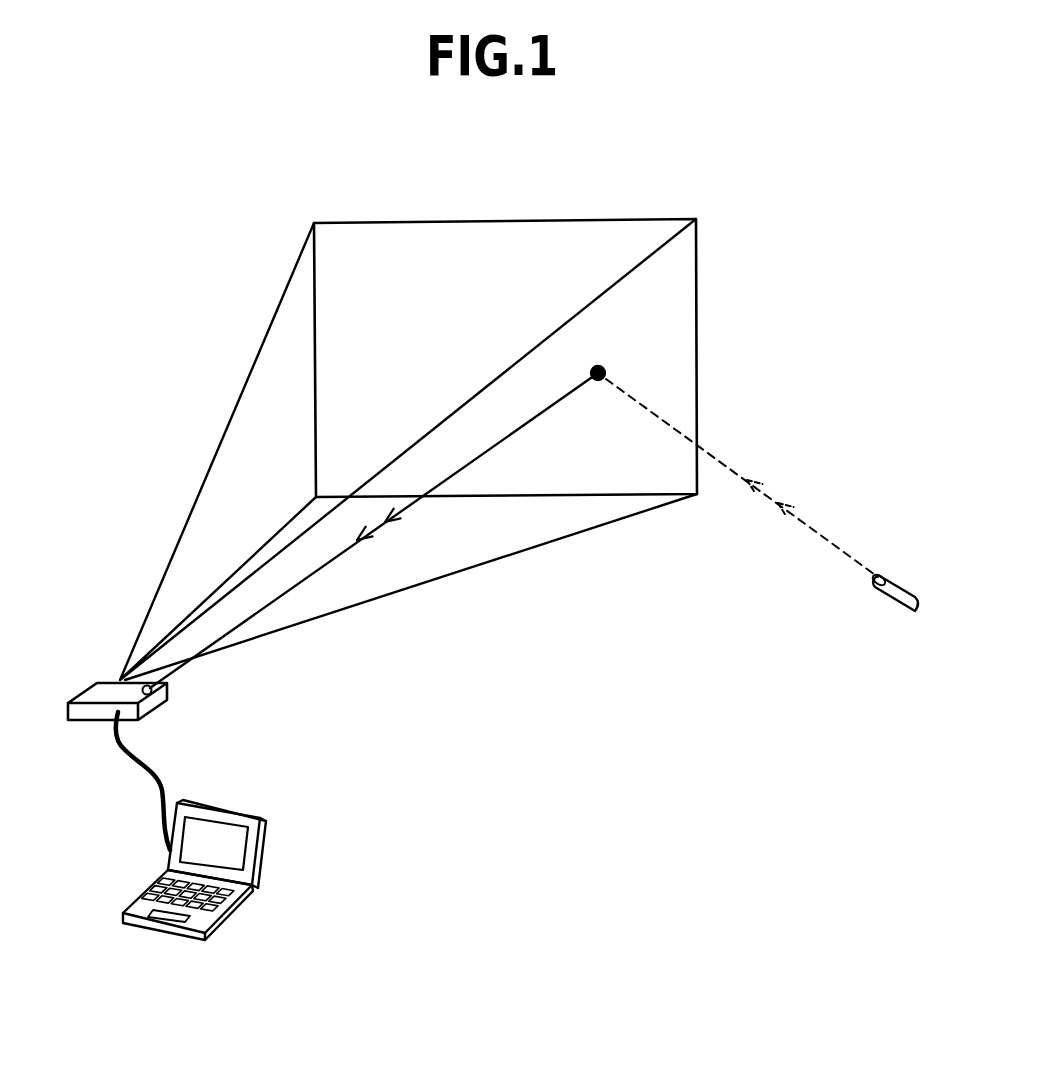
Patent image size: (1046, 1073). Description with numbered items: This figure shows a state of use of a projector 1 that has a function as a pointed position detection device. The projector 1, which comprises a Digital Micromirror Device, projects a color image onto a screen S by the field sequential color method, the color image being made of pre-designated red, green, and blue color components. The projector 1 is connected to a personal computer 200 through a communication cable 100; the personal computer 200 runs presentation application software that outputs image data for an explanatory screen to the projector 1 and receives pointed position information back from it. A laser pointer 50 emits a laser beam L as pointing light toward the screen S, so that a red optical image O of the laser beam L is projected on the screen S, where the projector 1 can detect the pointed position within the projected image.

The projector 1 is at (95, 690).
The screen S is at (697, 279).
The optical image O is at (603, 370).
The laser beam L is at (818, 532).
The laser pointer 50 is at (900, 575).
The communication cable 100 is at (158, 777).
The personal computer 200 is at (267, 855).